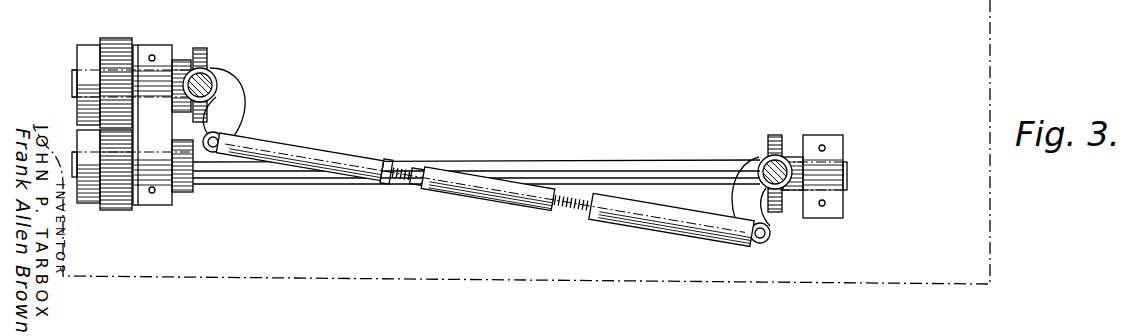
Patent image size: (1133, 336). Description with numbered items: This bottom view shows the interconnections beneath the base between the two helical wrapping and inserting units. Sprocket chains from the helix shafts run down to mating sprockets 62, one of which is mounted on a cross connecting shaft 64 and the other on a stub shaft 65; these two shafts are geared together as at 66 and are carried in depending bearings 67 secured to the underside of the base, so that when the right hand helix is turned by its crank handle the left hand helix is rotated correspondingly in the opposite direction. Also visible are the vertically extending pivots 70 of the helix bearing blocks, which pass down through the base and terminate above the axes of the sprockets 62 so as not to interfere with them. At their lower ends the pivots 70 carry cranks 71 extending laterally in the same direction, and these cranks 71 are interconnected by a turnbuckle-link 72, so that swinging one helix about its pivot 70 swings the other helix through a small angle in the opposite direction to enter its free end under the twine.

The mating sprocket 62 is at (209, 52).
The cross connecting shaft 64 is at (612, 163).
The stub shaft 65 is at (180, 60).
The gearing 66 is at (116, 42).
The depending bearing 67 is at (152, 206).
The pivot 70 is at (210, 77).
The crank 71 is at (238, 106).
The turnbuckle-link 72 is at (612, 210).